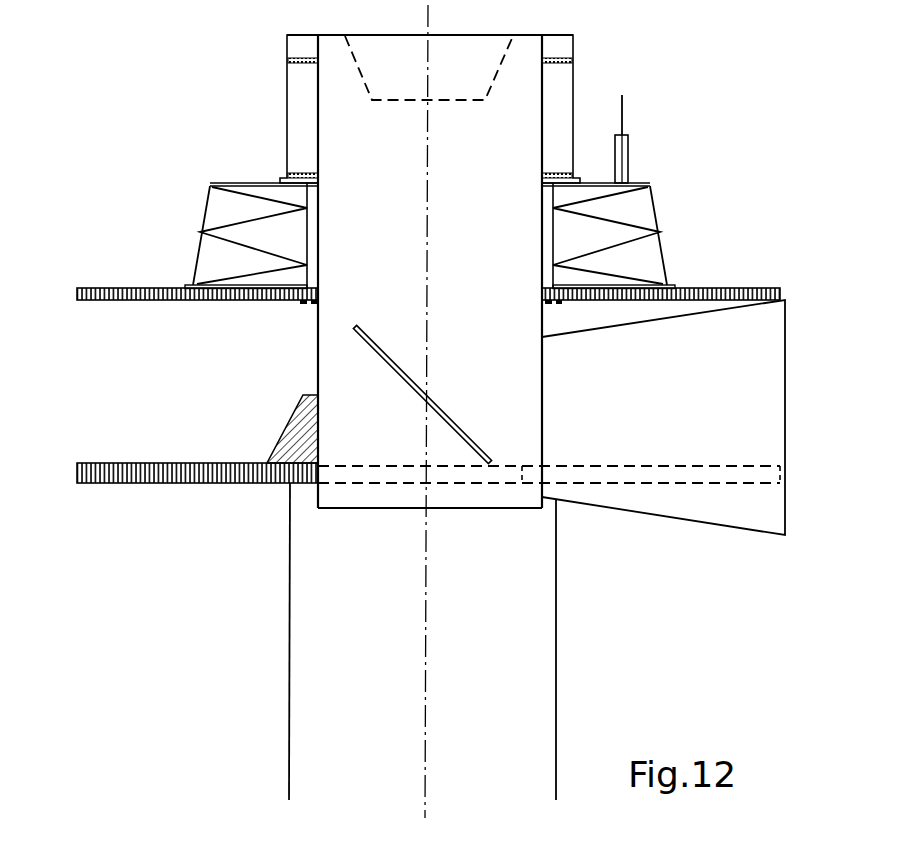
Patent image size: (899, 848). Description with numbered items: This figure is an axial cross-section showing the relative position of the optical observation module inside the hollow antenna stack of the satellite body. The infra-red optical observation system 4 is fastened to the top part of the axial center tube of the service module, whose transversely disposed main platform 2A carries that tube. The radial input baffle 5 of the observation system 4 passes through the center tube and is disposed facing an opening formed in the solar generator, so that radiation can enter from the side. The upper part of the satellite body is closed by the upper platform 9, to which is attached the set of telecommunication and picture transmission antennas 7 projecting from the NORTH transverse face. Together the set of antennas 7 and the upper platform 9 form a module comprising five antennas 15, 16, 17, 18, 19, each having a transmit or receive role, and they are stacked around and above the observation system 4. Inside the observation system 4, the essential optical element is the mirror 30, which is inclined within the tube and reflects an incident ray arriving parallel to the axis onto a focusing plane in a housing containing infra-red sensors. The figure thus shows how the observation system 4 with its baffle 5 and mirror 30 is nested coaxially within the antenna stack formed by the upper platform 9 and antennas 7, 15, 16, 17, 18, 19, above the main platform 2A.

The infra-red optical observation system 4 is at (363, 510).
The radial input baffle 5 is at (785, 397).
The set of telecommunication and picture transmission antennas 7 is at (656, 122).
The upper platform 9 is at (785, 291).
The antenna 15 is at (664, 262).
The antenna 16 is at (656, 214).
The antenna 17 is at (287, 118).
The antenna 18 is at (626, 157).
The antenna 19 is at (287, 37).
The main platform 2A is at (154, 463).
The mirror 30 is at (450, 420).